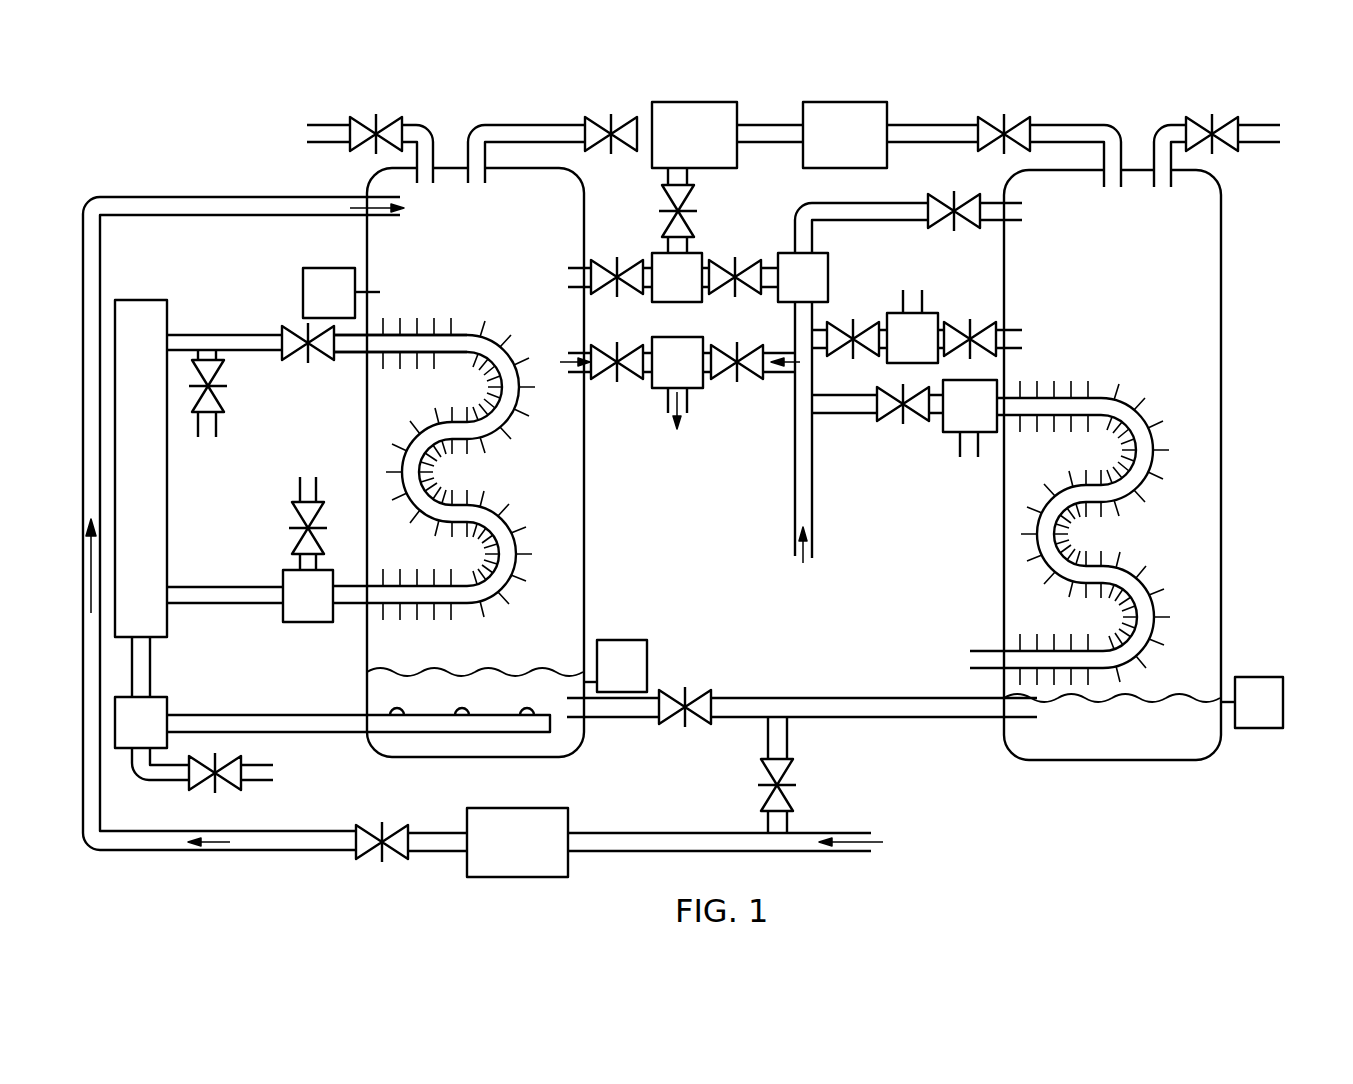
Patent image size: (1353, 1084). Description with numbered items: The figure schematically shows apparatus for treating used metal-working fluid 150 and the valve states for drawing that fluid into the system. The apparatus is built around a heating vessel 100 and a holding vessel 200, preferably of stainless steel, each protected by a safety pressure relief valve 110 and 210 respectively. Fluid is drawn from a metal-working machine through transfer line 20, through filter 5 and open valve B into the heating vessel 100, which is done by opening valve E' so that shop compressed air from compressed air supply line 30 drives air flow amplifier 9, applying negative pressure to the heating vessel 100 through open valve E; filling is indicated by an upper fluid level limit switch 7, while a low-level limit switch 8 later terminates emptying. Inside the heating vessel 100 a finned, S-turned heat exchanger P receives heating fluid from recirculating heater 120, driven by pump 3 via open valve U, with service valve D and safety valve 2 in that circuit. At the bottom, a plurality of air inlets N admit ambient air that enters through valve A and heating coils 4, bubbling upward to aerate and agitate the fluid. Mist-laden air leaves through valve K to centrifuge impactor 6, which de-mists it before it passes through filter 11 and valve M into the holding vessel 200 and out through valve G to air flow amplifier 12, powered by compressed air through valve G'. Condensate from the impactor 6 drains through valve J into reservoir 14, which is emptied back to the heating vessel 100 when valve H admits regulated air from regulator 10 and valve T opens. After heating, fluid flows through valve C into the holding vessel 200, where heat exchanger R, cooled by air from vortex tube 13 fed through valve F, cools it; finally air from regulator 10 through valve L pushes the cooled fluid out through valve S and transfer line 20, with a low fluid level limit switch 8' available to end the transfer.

The heating vessel 100 is at (370, 180).
The safety pressure relief valve 110 is at (393, 134).
The recirculating heater 120 is at (141, 468).
The metal-working fluid 150 is at (793, 710).
The holding vessel 200 is at (1223, 312).
The safety pressure relief valve 210 is at (1232, 137).
The safety valve 2 is at (208, 367).
The pump 3 is at (308, 596).
The heating coils 4 is at (141, 722).
The filter 5 is at (517, 842).
The centrifuge impactor 6 is at (694, 135).
The upper fluid level limit switch 7 is at (341, 293).
The low-level limit switch 8 is at (615, 666).
The low fluid level limit switch 8' is at (1252, 702).
The air flow amplifier 9 is at (677, 383).
The regulator 10 is at (803, 277).
The filter 11 is at (845, 135).
The air flow amplifier 12 is at (912, 326).
The vortex tube 13 is at (970, 418).
The reservoir 14 is at (677, 277).
The transfer line 20 is at (802, 853).
The compressed air supply line 30 is at (793, 531).
The valve A is at (198, 775).
The valve B is at (370, 852).
The valve C is at (700, 705).
The valve D is at (290, 347).
The valve E is at (602, 394).
The valve E' is at (755, 394).
The valve F is at (885, 415).
The valve G is at (967, 306).
The valve G' is at (857, 307).
The valve H is at (753, 277).
The valve J is at (677, 228).
The valve K is at (593, 133).
The valve L is at (937, 208).
The valve M is at (1022, 133).
The air inlets N is at (527, 719).
The heat exchanger P is at (487, 517).
The heat exchanger R is at (1145, 452).
The valve S is at (778, 770).
The valve T is at (600, 280).
The valve U is at (308, 513).